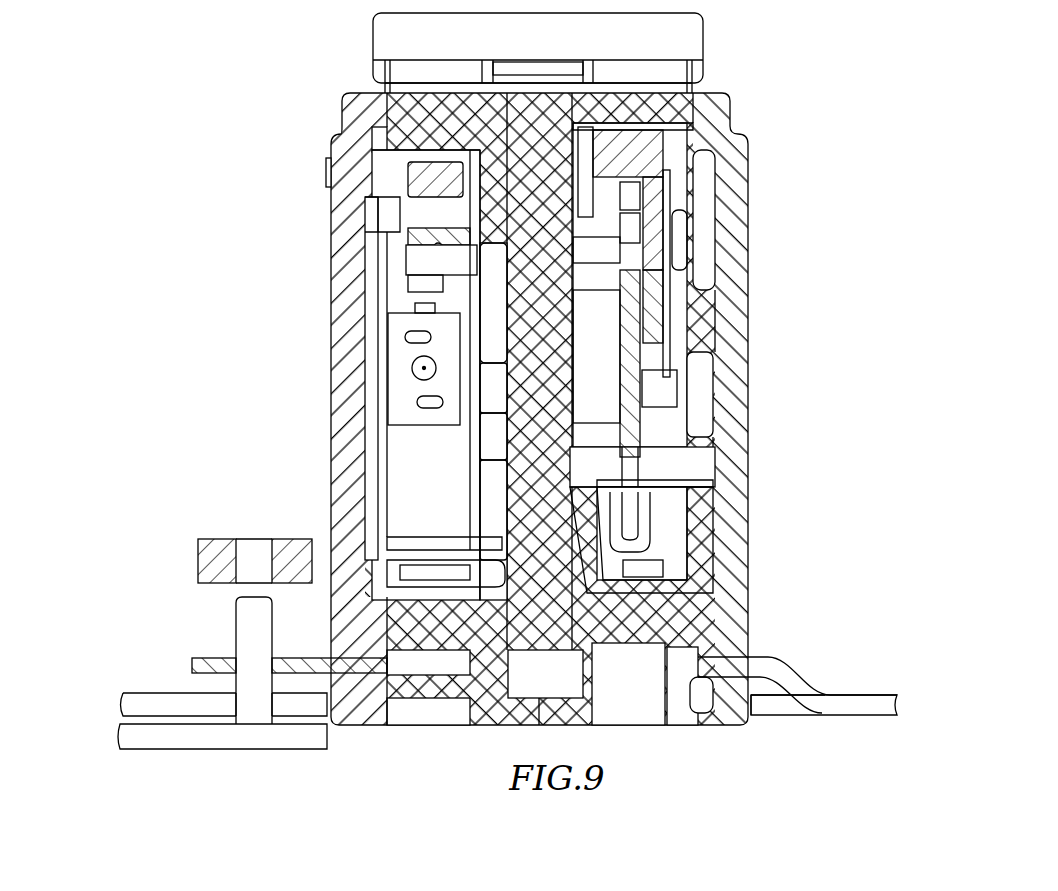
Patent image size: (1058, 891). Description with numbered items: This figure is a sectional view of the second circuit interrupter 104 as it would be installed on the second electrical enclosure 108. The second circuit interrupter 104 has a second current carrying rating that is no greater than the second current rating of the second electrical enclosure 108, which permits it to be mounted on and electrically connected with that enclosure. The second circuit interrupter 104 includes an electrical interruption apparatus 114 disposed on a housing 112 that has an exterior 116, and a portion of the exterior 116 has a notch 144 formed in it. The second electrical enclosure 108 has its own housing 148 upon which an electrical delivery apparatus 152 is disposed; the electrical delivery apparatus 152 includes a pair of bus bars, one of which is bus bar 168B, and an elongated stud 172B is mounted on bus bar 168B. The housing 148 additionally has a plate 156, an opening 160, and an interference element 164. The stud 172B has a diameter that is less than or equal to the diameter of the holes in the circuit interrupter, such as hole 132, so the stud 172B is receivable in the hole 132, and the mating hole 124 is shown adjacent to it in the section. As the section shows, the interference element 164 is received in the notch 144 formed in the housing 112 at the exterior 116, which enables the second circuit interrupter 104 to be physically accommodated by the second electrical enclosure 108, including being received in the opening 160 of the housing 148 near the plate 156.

The second circuit interrupter 104 is at (757, 156).
The housing 112 is at (751, 213).
The exterior 116 is at (752, 583).
The second electrical enclosure 108 is at (851, 688).
The electrical interruption apparatus 114 is at (304, 648).
The seal strip 124 is at (192, 660).
The hole 132 is at (235, 657).
The notch 144 is at (667, 648).
The interference element 164 is at (717, 690).
The housing 148 is at (868, 715).
The plate 156 is at (793, 711).
The opening 160 is at (752, 700).
The electrical delivery apparatus 152 is at (190, 752).
The bus bar 168B is at (328, 737).
The stud 172B is at (275, 685).